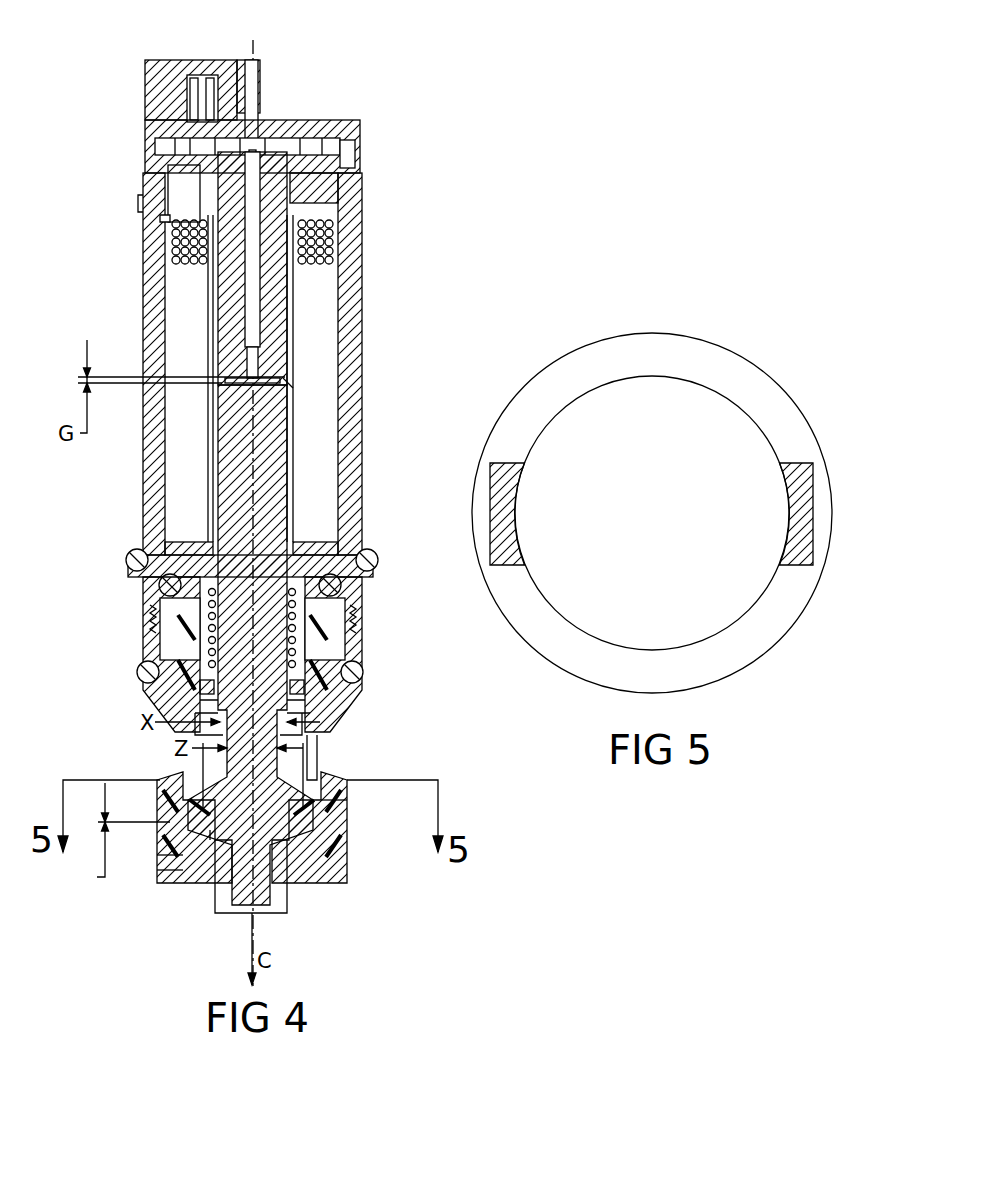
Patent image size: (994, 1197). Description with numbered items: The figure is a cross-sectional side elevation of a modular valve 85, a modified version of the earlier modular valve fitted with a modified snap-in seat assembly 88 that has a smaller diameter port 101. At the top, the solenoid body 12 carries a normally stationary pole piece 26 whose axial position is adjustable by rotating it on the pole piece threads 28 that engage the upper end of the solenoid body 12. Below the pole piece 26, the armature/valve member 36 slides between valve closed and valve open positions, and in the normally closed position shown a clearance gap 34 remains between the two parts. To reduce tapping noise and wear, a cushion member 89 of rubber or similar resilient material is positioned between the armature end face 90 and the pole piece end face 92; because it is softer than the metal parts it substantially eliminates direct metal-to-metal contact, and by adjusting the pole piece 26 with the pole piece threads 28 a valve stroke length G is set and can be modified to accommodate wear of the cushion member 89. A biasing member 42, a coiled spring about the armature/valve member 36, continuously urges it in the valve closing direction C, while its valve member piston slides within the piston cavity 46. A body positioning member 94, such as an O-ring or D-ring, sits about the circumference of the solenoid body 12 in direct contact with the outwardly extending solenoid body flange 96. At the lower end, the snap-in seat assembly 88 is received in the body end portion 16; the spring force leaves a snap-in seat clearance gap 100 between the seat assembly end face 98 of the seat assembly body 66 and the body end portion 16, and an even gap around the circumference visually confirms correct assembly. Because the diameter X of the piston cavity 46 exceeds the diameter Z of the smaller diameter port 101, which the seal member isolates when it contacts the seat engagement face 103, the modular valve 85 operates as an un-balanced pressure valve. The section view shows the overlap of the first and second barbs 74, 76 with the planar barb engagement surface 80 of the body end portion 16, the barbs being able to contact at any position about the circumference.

In FIG. 4, the solenoid body 12 is at (148, 538).
In FIG. 4, the body end portion 16 is at (338, 808).
In FIG. 5, the body end portion 16 is at (712, 687).
In FIG. 4, the pole piece 26 is at (273, 291).
In FIG. 4, the pole piece threads 28 is at (300, 170).
In FIG. 4, the clearance gap 34 is at (222, 385).
In FIG. 4, the armature/valve member 36 is at (273, 468).
In FIG. 4, the biasing member 42 is at (190, 625).
In FIG. 4, the piston cavity 46 is at (302, 732).
In FIG. 4, the seat assembly body 66 is at (170, 876).
In FIG. 5, the first barb 74 is at (502, 505).
In FIG. 5, the second barb 76 is at (798, 478).
In FIG. 5, the planar barb engagement surface 80 is at (768, 355).
In FIG. 4, the modular valve 85 is at (443, 192).
In FIG. 4, the snap-in seat assembly 88 is at (355, 878).
In FIG. 4, the cushion member 89 is at (288, 380).
In FIG. 4, the armature end face 90 is at (230, 376).
In FIG. 4, the pole piece end face 92 is at (284, 386).
In FIG. 4, the body positioning member 94 is at (362, 556).
In FIG. 4, the solenoid body flange 96 is at (376, 582).
In FIG. 4, the seat assembly end face 98 is at (352, 812).
In FIG. 4, the snap-in seat clearance gap 100 is at (114, 836).
In FIG. 4, the smaller diameter port 101 is at (211, 838).
In FIG. 4, the seat engagement face 103 is at (166, 870).